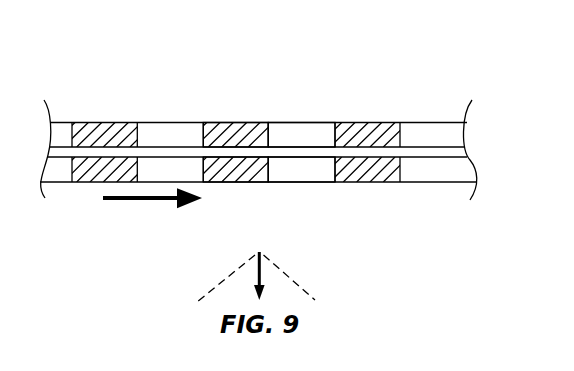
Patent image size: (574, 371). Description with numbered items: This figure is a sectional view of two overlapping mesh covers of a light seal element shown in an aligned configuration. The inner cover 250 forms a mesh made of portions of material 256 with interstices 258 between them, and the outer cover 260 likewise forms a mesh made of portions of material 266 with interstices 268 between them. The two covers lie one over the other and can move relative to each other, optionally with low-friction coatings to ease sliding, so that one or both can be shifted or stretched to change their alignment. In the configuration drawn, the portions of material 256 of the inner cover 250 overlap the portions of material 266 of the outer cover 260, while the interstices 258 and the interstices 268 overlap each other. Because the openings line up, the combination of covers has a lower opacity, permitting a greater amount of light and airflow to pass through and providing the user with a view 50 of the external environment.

The inner cover 250 is at (56, 122).
The portions of material 256 is at (232, 128).
The interstices 258 is at (300, 131).
The outer cover 260 is at (62, 172).
The portions of material 266 is at (232, 172).
The interstices 268 is at (302, 172).
The view 50 is at (287, 270).